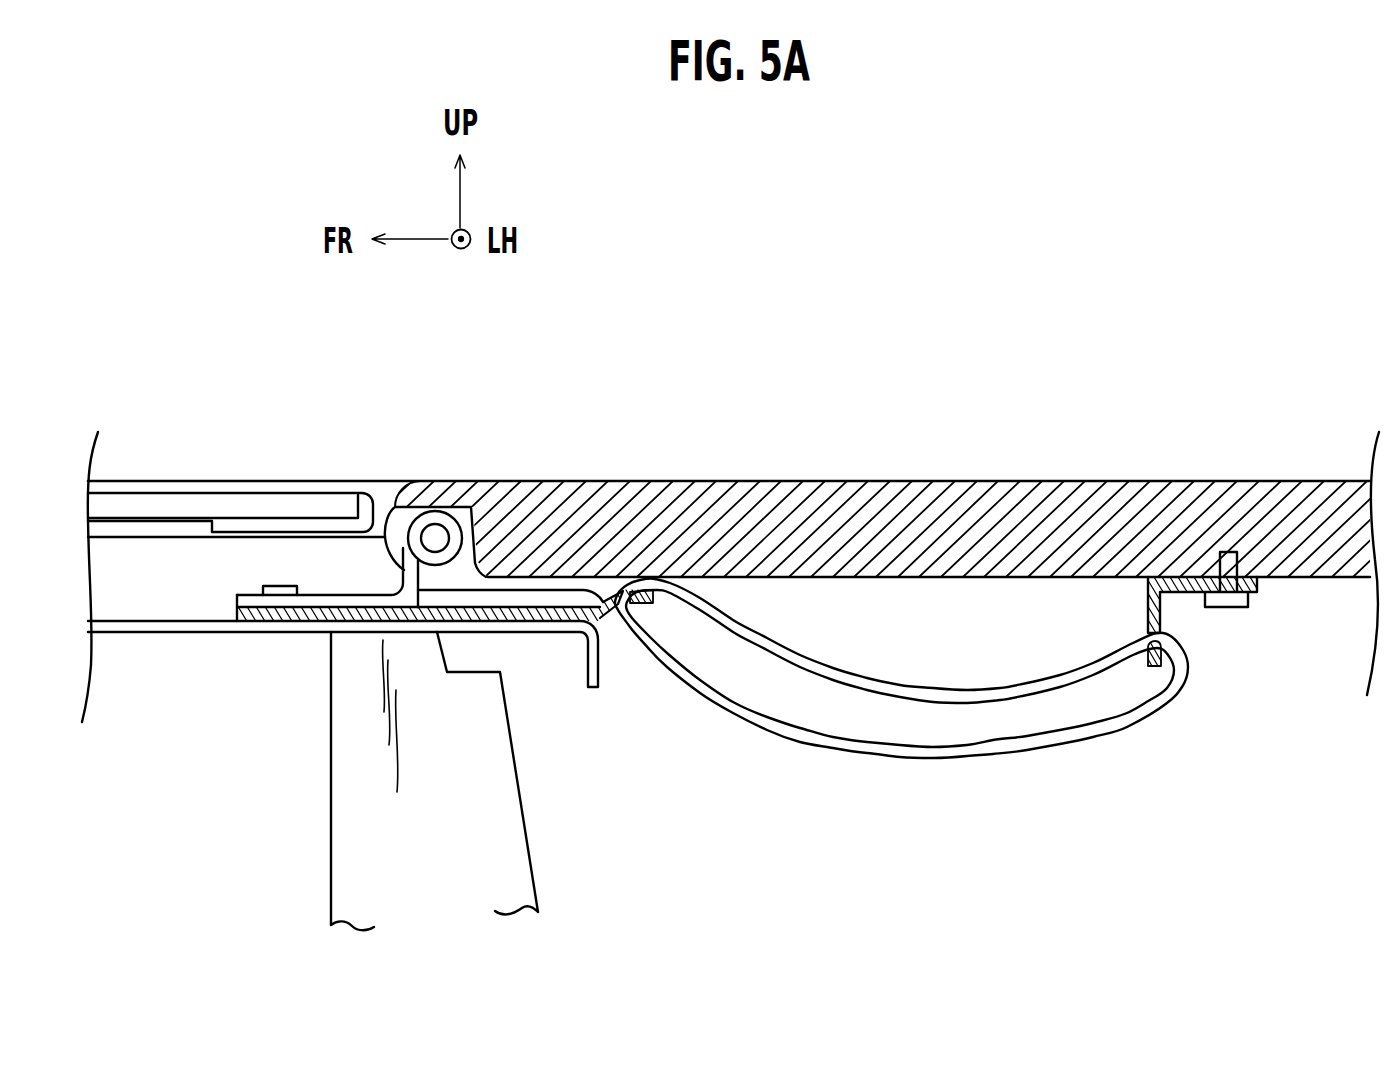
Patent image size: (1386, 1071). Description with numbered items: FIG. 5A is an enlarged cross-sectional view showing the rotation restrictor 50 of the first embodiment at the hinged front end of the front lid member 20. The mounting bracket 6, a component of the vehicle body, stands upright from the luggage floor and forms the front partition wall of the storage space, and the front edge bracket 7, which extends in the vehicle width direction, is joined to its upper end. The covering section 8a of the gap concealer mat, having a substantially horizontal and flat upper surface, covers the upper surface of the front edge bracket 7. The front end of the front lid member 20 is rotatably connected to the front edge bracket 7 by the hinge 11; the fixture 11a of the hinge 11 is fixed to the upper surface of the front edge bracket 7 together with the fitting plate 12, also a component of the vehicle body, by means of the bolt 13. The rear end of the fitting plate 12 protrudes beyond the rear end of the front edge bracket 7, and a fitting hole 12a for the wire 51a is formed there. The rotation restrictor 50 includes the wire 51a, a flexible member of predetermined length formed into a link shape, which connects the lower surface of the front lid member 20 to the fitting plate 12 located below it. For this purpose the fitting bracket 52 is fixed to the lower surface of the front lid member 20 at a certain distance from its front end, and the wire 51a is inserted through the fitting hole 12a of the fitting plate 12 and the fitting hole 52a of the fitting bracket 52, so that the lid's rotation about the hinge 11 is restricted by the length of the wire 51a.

The mounting bracket 6 is at (538, 838).
The front edge bracket 7 is at (147, 637).
The covering section 8a is at (198, 480).
The hinge 11 is at (435, 533).
The fixture 11a is at (320, 593).
The fitting plate 12 is at (517, 608).
The fitting hole 12a is at (622, 583).
The bolt 13 is at (273, 586).
The front lid member 20 is at (1028, 471).
The rotation restrictor 50 is at (792, 755).
The wire 51a is at (903, 753).
The fitting bracket 52 is at (1160, 612).
The fitting hole 52a is at (1145, 638).